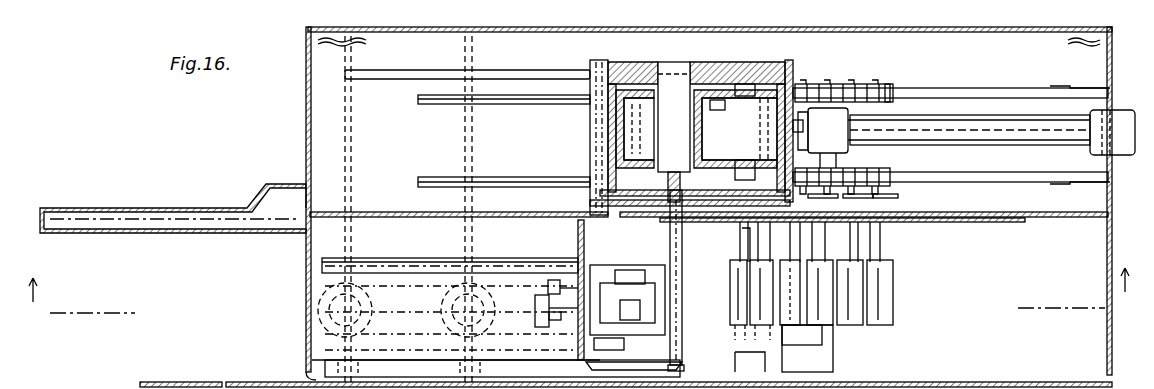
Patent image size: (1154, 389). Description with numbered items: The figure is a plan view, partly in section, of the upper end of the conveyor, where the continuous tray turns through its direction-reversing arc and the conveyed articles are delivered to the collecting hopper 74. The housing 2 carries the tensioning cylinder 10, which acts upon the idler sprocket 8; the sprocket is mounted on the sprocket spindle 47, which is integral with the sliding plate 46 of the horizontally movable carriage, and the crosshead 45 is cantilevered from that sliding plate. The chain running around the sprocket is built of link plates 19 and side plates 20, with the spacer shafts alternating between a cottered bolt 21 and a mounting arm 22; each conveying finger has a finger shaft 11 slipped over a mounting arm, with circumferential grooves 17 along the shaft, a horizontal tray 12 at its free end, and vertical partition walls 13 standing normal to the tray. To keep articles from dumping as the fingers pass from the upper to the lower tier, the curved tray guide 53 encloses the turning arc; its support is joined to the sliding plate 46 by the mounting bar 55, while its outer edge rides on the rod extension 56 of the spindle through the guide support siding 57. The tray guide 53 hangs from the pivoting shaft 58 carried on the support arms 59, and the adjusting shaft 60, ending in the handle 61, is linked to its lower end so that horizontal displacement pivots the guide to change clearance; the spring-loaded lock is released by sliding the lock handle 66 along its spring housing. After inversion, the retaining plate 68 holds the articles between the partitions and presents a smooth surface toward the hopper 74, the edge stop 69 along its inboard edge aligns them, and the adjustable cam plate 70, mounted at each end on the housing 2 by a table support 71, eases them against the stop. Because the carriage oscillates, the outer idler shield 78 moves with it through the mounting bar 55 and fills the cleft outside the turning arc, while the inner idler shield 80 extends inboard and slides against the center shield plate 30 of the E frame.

The housing 2 is at (953, 34).
The idler sprocket 8 is at (728, 110).
The tensioning cylinder 10 is at (1008, 120).
The finger shaft 11 is at (865, 238).
The horizontal tray 12 is at (880, 325).
The vertical partition walls 13 is at (893, 314).
The circumferential grooves 17 is at (578, 297).
The link plates 19 is at (860, 84).
The side plates 20 is at (288, 200).
The cottered bolt 21 is at (862, 72).
The mounting arm 22 is at (870, 158).
The center shield plate 30 is at (1064, 222).
The crosshead 45 is at (792, 96).
The sliding plate 46 is at (722, 62).
The sprocket spindle 47 is at (668, 80).
The tray guide 53 is at (632, 270).
The mounting bar 55 is at (592, 150).
The rod extension 56 is at (683, 298).
The guide support siding 57 is at (646, 370).
The pivoting shaft 58 is at (608, 270).
The support arms 59 is at (584, 228).
The adjusting shaft 60 is at (556, 322).
The handle 61 is at (534, 318).
The lock handle 66 is at (548, 288).
The retaining plate 68 is at (506, 266).
The edge stop 69 is at (398, 268).
The cam plate 70 is at (420, 360).
The table support 71 is at (350, 60).
The collecting hopper 74 is at (812, 340).
The outer idler shield 78 is at (366, 219).
The inner idler shield 80 is at (958, 220).